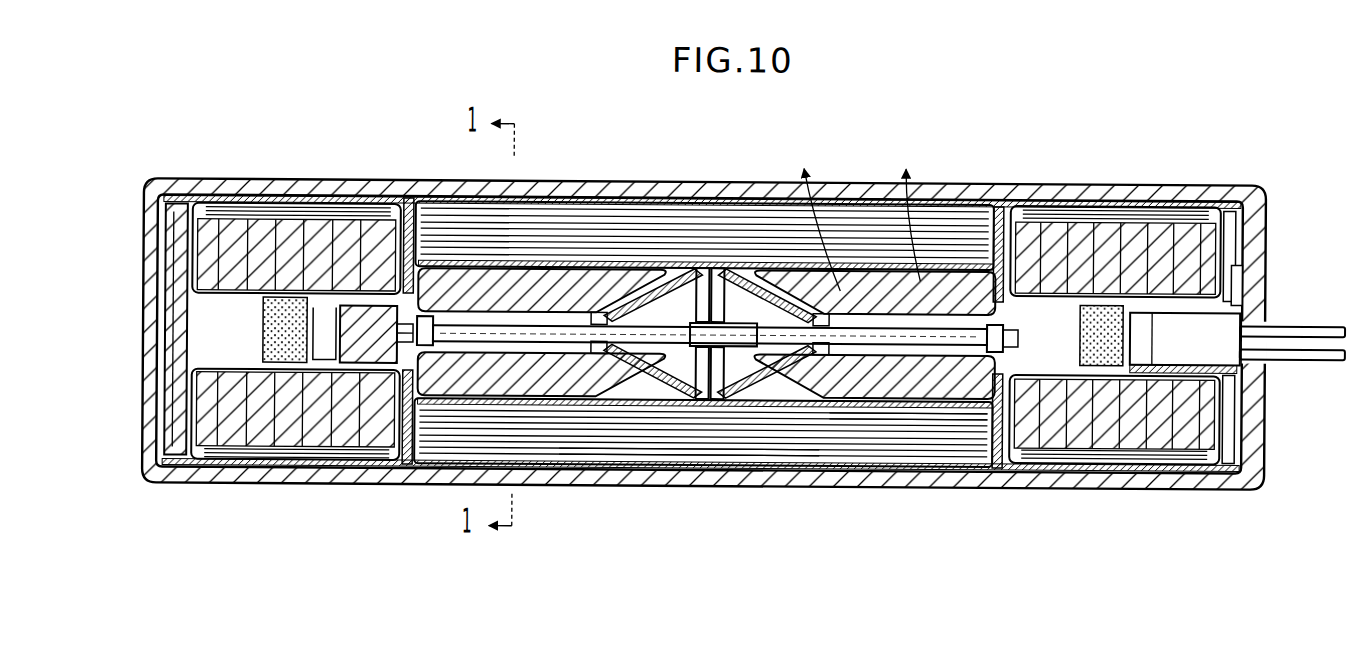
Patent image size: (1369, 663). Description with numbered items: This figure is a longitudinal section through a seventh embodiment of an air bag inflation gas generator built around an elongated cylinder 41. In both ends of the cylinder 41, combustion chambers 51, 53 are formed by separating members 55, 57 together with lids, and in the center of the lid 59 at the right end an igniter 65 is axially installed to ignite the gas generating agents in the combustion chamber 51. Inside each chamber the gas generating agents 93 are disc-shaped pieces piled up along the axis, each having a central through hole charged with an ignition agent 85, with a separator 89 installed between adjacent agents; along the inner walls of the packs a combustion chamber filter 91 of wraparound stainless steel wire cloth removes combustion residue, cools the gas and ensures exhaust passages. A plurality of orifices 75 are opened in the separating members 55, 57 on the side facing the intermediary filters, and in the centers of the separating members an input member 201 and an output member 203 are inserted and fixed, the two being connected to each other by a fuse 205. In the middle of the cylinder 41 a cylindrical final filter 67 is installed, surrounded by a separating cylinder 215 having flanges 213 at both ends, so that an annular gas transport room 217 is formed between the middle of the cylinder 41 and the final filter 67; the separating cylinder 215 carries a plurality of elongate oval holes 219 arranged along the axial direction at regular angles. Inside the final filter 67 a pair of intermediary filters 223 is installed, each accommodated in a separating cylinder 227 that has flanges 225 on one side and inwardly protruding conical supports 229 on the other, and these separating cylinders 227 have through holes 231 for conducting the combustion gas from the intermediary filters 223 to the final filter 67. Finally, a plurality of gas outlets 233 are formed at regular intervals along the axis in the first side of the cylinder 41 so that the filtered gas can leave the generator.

The cylinder 41 is at (955, 278).
The combustion chamber 51 is at (1184, 198).
The combustion chamber 53 is at (215, 198).
The separating member 55 is at (950, 338).
The separating member 57 is at (388, 440).
The lid 59 is at (1232, 274).
The igniter 65 is at (1259, 300).
The final filter 67 is at (617, 417).
The orifices 75 is at (403, 279).
The ignition agent 85 is at (275, 322).
The separator 89 is at (1150, 425).
The combustion chamber filter 91 is at (1153, 457).
The gas generating agent 93 is at (232, 435).
The input member 201 is at (1062, 295).
The output member 203 is at (338, 362).
The fuse 205 is at (913, 410).
The flanges 213 is at (412, 203).
The separating cylinder 215 is at (765, 215).
The annular gas transport room 217 is at (687, 457).
The elongate oval holes 219 is at (815, 407).
The intermediary filters 223 is at (460, 281).
The flanges 225 is at (412, 470).
The separating cylinders 227 is at (533, 415).
The conical supports 229 is at (713, 266).
The through holes 231 is at (497, 268).
The gas outlets 233 is at (597, 182).